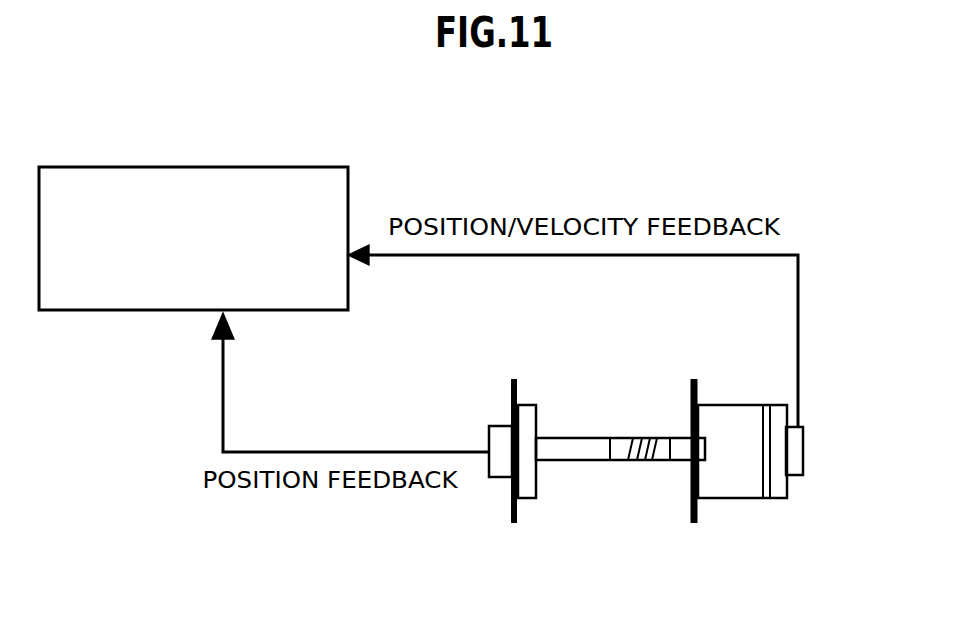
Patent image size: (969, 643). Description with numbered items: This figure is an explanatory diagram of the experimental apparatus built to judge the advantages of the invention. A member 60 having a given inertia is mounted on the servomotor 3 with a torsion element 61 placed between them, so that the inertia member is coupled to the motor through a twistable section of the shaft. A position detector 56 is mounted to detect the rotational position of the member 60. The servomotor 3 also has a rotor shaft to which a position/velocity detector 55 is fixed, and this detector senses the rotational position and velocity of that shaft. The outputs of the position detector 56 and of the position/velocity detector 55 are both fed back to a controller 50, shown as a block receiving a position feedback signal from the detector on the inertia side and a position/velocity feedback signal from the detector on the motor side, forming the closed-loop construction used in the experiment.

The controller 50 is at (237, 172).
The position detector 56 is at (497, 425).
The member having given inertia 60 is at (527, 498).
The torsion element 61 is at (630, 462).
The servomotor 3 is at (725, 413).
The position/velocity detector 55 is at (803, 452).